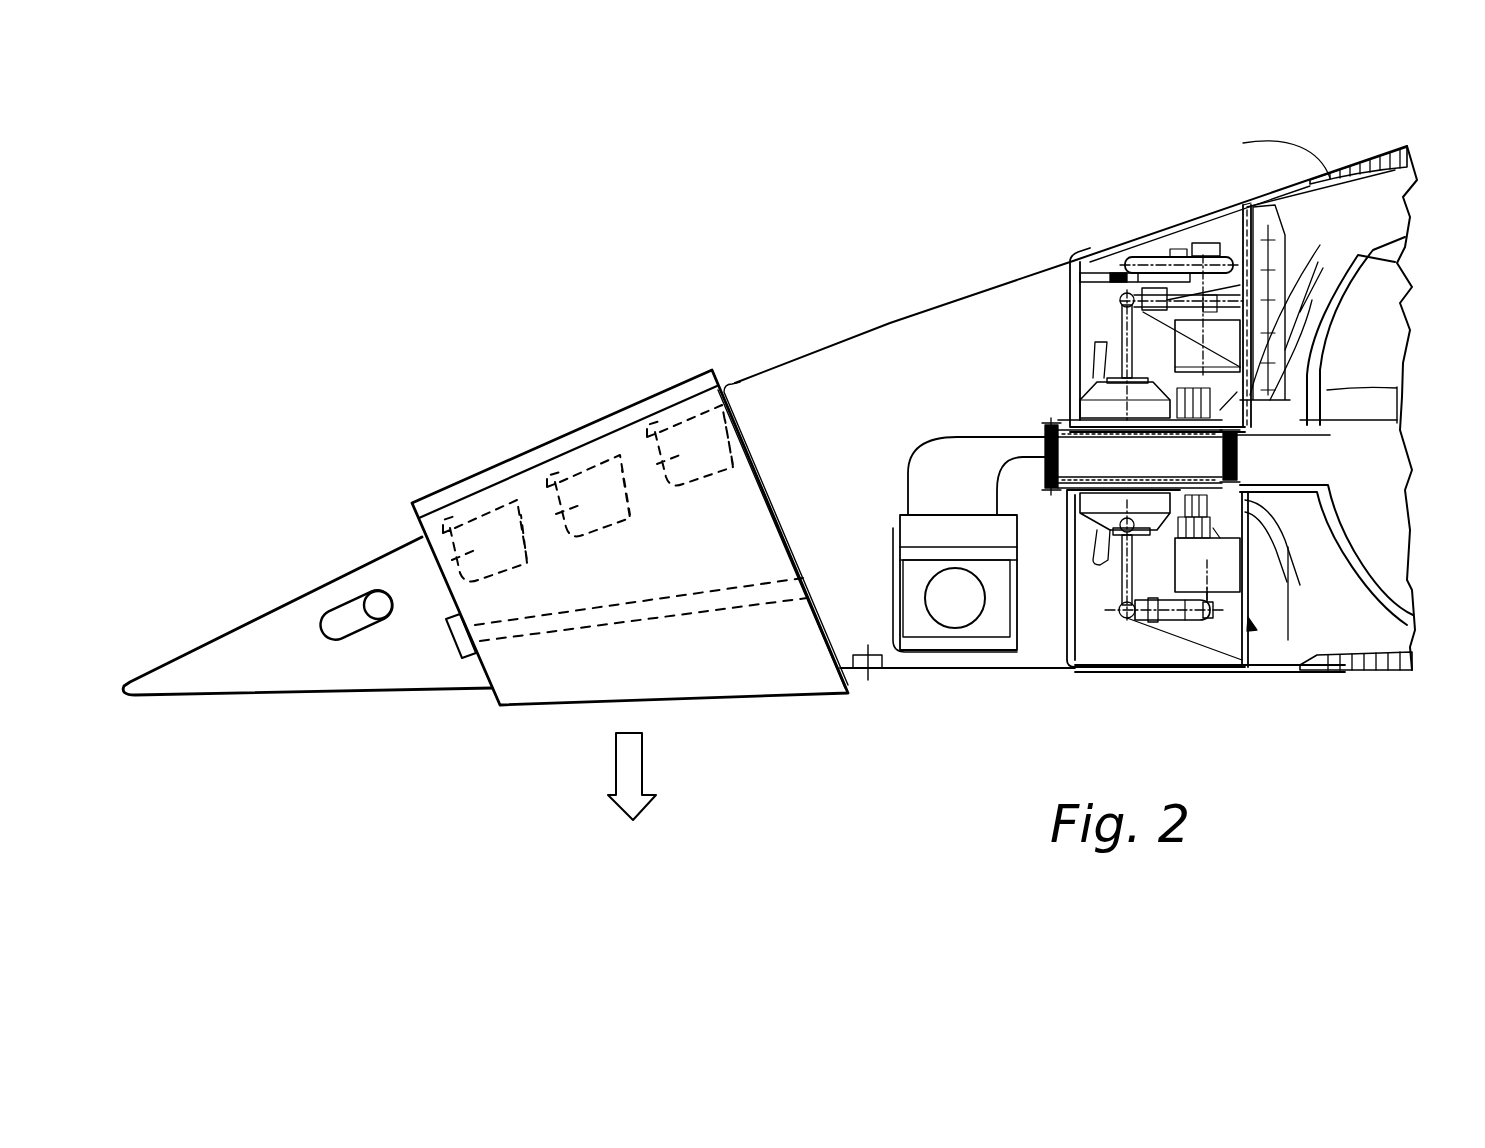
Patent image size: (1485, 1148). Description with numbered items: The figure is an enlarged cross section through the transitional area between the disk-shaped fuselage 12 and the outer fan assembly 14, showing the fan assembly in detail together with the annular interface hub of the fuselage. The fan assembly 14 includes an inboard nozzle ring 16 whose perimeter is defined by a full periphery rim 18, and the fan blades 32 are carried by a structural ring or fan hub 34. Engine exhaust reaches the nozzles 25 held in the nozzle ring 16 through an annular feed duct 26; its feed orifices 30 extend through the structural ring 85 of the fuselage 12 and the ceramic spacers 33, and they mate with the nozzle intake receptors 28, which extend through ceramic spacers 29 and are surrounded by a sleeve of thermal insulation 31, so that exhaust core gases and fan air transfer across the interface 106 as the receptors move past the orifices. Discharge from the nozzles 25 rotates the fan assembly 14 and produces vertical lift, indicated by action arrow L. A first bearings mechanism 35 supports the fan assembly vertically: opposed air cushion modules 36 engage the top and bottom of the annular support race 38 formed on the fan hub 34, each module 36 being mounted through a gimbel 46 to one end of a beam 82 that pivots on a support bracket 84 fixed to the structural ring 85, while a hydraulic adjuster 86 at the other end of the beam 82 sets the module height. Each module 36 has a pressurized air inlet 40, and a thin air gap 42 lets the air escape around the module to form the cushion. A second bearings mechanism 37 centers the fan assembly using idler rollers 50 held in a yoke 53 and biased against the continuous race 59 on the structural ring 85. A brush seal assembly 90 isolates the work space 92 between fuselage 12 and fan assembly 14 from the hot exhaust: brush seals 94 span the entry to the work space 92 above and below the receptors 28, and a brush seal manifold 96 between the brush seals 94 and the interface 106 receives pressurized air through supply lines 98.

The fuselage 12 is at (1268, 154).
The fan assembly 14 is at (418, 428).
The nozzle ring 16 is at (820, 347).
The rim 18 is at (246, 620).
The nozzles 25 is at (935, 612).
The feed duct 26 is at (1352, 552).
The nozzle intake receptors 28 is at (1140, 454).
The ceramic spacers 29 is at (1040, 459).
The feed orifices 30 is at (1283, 454).
The sleeve of thermal insulation 31 is at (1045, 437).
The fan blades 32 is at (630, 537).
The ceramic spacers 33 is at (1397, 420).
The fan hub 34 is at (1068, 313).
The first bearings mechanism 35 is at (1037, 696).
The air cushion modules 36 is at (1062, 395).
The second bearings mechanism 37 is at (1148, 218).
The annular support race 38 is at (1100, 415).
The pressurized air inlet 40 is at (1080, 360).
The thin air gap 42 is at (1110, 428).
The gimbel 46 is at (1100, 570).
The idler rollers 50 is at (1122, 252).
The yoke 53 is at (1103, 253).
The continuous race 59 is at (1245, 200).
The beam 82 is at (1126, 618).
The support bracket 84 is at (1185, 626).
The structural ring 85 is at (1250, 224).
The hydraulic adjuster 86 is at (1223, 586).
The brush seal assembly 90 is at (1262, 632).
The work space 92 is at (1208, 230).
The brush seal 94 is at (1308, 244).
The brush seal manifold 96 is at (1326, 291).
The supply lines 98 is at (1290, 337).
The interface 106 is at (1396, 399).
The action arrow L is at (632, 764).